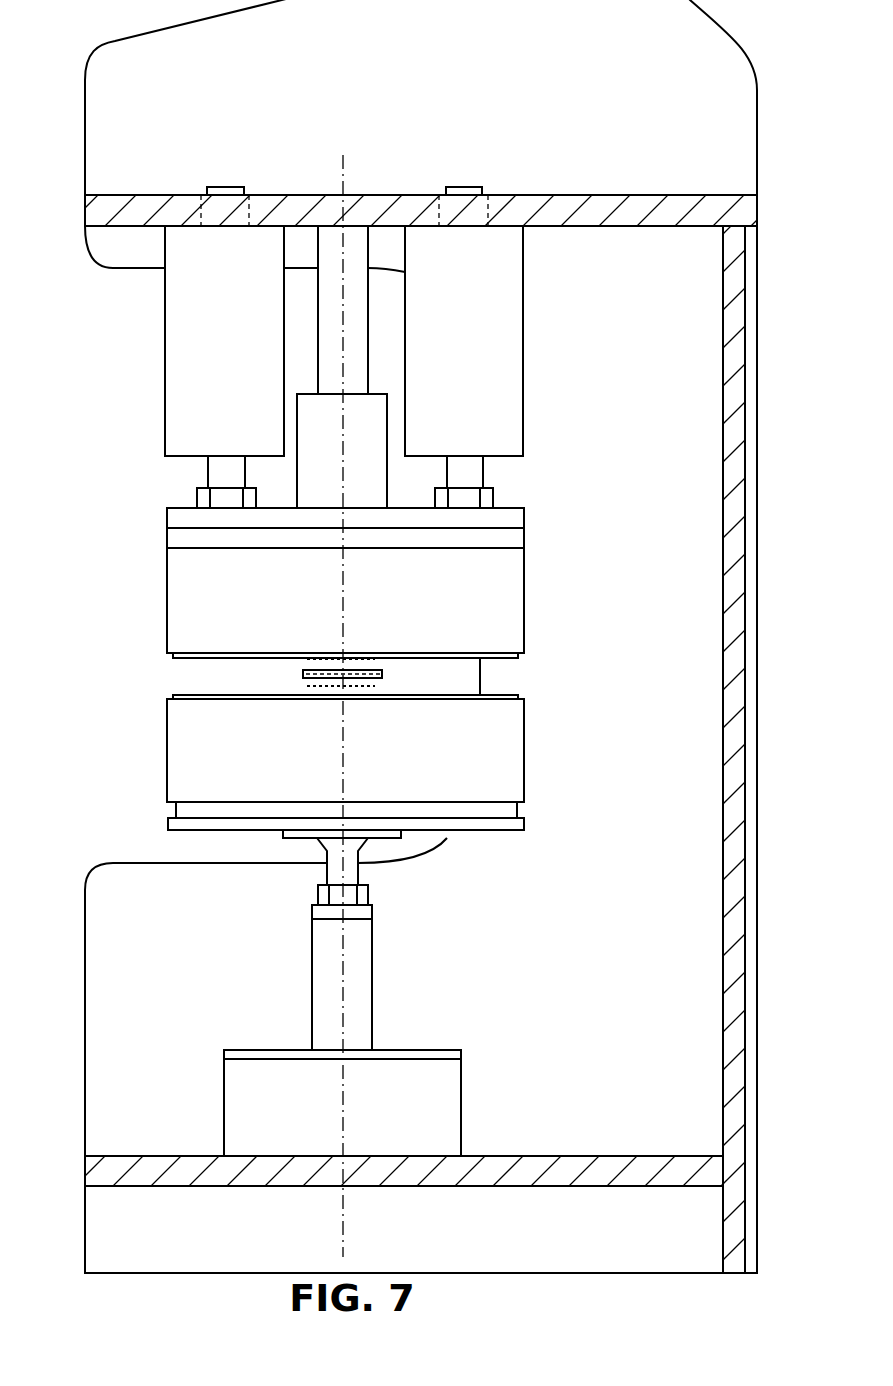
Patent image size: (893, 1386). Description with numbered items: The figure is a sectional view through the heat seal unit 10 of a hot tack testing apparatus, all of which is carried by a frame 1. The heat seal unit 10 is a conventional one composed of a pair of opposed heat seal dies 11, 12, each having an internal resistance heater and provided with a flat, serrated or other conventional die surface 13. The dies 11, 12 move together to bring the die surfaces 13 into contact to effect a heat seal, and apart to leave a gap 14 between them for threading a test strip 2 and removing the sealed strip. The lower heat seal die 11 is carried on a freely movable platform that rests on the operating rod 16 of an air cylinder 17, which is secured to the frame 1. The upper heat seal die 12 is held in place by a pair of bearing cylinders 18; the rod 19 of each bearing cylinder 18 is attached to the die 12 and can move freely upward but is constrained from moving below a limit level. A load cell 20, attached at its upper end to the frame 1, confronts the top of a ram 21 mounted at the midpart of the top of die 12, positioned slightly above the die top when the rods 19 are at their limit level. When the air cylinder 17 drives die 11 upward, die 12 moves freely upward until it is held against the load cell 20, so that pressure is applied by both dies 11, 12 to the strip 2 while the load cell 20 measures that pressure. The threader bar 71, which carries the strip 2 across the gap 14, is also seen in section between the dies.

The frame 1 is at (93, 140).
The strip 2 is at (307, 684).
The heat seal unit 10 is at (130, 614).
The heat seal die 11 is at (182, 759).
The heat seal die 12 is at (182, 586).
The surface 13 is at (518, 656).
The gap 14 is at (162, 679).
The operating rod 16 is at (330, 873).
The air cylinder 17 is at (229, 1106).
The bearing cylinder 18 is at (176, 354).
The rod 19 is at (215, 475).
The load cell 20 is at (350, 258).
The ram 21 is at (333, 464).
The threader bar 71 is at (367, 680).